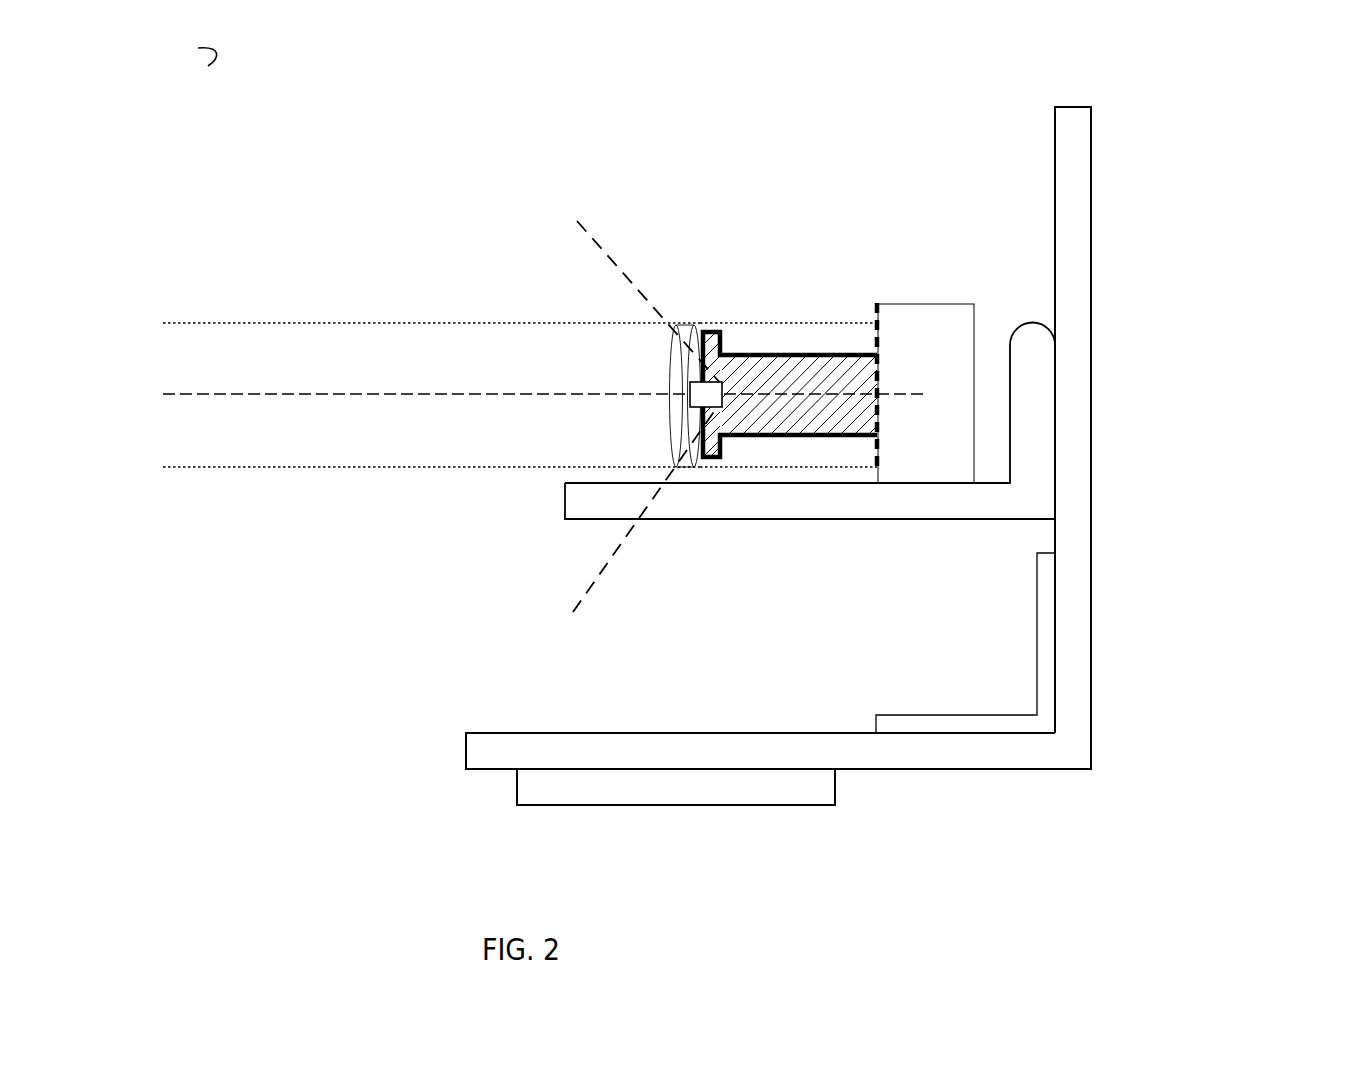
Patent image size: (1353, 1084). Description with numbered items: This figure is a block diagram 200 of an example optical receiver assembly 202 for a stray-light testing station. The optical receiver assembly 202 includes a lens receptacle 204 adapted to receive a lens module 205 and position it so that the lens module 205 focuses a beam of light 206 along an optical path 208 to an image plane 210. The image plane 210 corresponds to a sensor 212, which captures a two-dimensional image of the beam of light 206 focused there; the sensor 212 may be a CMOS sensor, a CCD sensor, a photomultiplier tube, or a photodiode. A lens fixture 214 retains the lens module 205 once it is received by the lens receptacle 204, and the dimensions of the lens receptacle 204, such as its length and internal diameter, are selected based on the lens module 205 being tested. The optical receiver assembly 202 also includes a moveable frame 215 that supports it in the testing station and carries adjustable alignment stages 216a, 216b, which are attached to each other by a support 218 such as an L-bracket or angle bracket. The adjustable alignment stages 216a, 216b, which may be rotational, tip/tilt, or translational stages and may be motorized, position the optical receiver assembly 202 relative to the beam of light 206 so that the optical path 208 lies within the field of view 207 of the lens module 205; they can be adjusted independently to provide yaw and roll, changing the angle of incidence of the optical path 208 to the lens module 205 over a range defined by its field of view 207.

The block diagram 200 is at (210, 86).
The optical receiver assembly 202 is at (575, 173).
The lens receptacle 204 is at (796, 322).
The lens module 205 is at (750, 357).
The beam of light 206 is at (309, 467).
The field of view 207 is at (598, 573).
The optical path 208 is at (457, 393).
The image plane 210 is at (877, 398).
The sensor 212 is at (926, 304).
The lens fixture 214 is at (690, 463).
The moveable frame 215 is at (1092, 700).
The adjustable alignment stage 216a is at (1028, 357).
The adjustable alignment stage 216b is at (743, 786).
The support 218 is at (1037, 589).